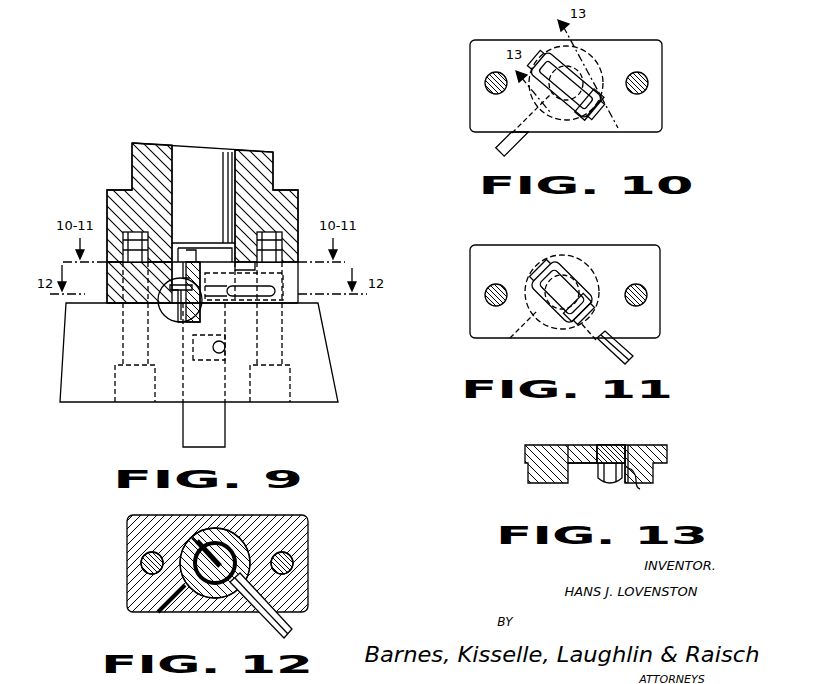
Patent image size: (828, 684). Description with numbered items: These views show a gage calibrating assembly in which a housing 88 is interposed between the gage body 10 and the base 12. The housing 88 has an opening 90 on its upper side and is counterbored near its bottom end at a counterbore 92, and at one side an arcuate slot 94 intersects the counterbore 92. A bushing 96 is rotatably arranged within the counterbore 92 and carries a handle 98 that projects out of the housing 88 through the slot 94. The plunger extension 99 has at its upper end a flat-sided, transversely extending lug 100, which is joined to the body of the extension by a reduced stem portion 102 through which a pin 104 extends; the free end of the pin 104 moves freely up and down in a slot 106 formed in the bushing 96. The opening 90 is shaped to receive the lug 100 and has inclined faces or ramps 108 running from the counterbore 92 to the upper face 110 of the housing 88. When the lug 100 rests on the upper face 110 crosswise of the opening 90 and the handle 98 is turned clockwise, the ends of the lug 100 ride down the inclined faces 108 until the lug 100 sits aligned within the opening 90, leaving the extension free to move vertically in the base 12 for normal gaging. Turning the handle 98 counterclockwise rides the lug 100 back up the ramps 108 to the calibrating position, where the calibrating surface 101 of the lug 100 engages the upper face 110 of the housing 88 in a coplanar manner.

In FIG. 9, the gage body 10 is at (270, 187).
In FIG. 9, the base 12 is at (325, 379).
In FIG. 9, the housing 88 is at (288, 292).
In FIG. 10, the housing 88 is at (654, 111).
In FIG. 11, the housing 88 is at (663, 298).
In FIG. 13, the housing 88 is at (668, 467).
In FIG. 9, the opening 90 is at (172, 252).
In FIG. 10, the opening 90 is at (556, 57).
In FIG. 11, the opening 90 is at (552, 262).
In FIG. 9, the counterbore 92 is at (186, 318).
In FIG. 12, the counterbore 92 is at (250, 552).
In FIG. 9, the arcuate slot 94 is at (190, 338).
In FIG. 12, the arcuate slot 94 is at (176, 603).
In FIG. 12, the bushing 96 is at (248, 553).
In FIG. 9, the handle 98 is at (222, 441).
In FIG. 10, the handle 98 is at (522, 143).
In FIG. 11, the handle 98 is at (636, 361).
In FIG. 12, the plunger extension 99 is at (294, 634).
In FIG. 9, the lug 100 is at (194, 248).
In FIG. 10, the lug 100 is at (586, 92).
In FIG. 11, the lug 100 is at (587, 283).
In FIG. 13, the lug 100 is at (613, 450).
In FIG. 9, the calibrating surface 101 is at (182, 247).
In FIG. 13, the calibrating surface 101 is at (609, 472).
In FIG. 9, the reduced stem portion 102 is at (196, 257).
In FIG. 13, the reduced stem portion 102 is at (641, 489).
In FIG. 12, the pin 104 is at (208, 543).
In FIG. 12, the slot 106 is at (191, 540).
In FIG. 10, the inclined faces 108 is at (590, 68).
In FIG. 11, the inclined faces 108 is at (576, 268).
In FIG. 9, the upper face 110 is at (246, 253).
In FIG. 11, the upper face 110 is at (650, 269).
In FIG. 13, the upper face 110 is at (560, 445).